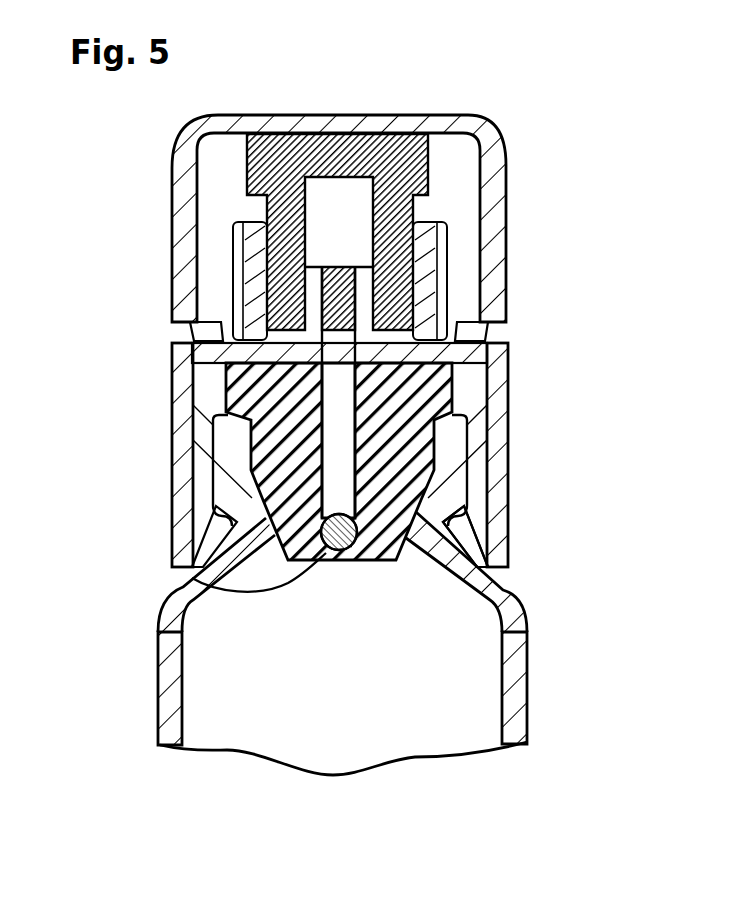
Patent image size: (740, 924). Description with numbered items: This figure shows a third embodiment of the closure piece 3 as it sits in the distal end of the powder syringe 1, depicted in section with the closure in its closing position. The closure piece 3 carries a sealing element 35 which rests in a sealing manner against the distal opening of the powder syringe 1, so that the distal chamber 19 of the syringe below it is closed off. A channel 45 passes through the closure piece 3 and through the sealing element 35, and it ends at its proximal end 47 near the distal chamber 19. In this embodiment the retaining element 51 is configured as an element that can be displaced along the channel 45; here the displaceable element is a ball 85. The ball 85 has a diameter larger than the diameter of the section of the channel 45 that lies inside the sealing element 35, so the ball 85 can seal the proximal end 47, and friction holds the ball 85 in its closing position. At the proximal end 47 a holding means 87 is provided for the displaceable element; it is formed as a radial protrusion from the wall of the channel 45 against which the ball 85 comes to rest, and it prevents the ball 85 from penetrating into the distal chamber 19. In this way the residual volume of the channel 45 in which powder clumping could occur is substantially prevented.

The powder syringe 1 is at (557, 687).
The closure piece 3 is at (532, 102).
The distal chamber 19 is at (225, 695).
The sealing element 35 is at (418, 457).
The channel 45 is at (345, 387).
The proximal end 47 is at (345, 561).
The retaining element 51 is at (465, 536).
The ball 85 is at (447, 548).
The holding means 87 is at (192, 578).